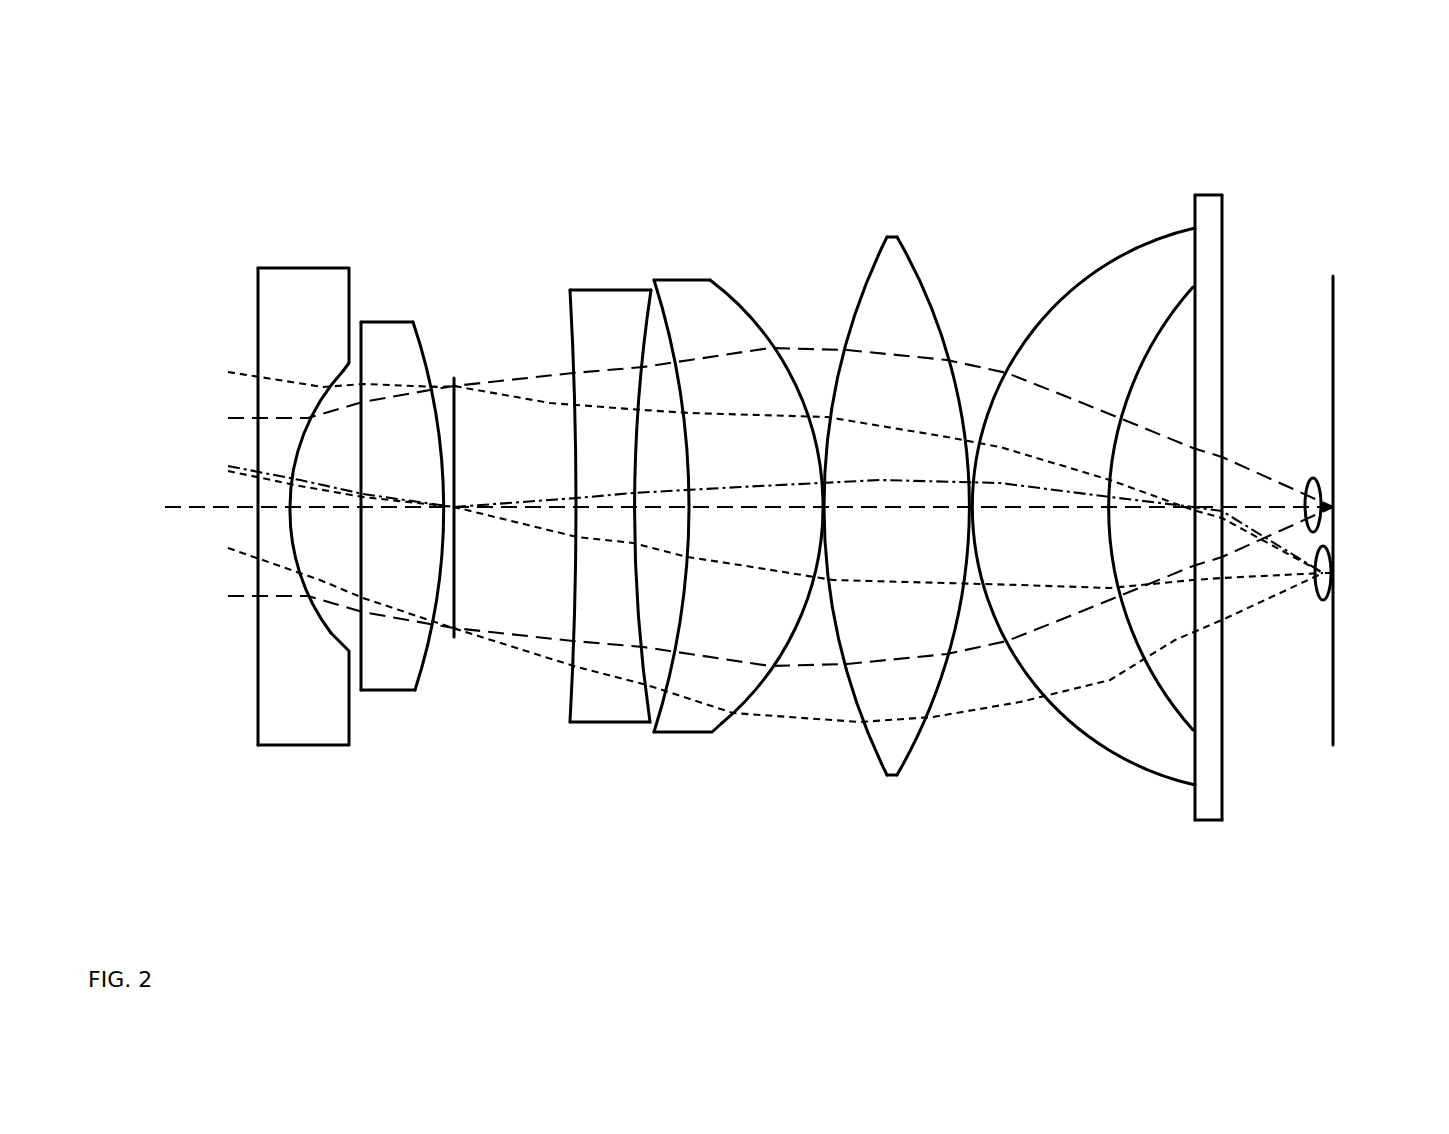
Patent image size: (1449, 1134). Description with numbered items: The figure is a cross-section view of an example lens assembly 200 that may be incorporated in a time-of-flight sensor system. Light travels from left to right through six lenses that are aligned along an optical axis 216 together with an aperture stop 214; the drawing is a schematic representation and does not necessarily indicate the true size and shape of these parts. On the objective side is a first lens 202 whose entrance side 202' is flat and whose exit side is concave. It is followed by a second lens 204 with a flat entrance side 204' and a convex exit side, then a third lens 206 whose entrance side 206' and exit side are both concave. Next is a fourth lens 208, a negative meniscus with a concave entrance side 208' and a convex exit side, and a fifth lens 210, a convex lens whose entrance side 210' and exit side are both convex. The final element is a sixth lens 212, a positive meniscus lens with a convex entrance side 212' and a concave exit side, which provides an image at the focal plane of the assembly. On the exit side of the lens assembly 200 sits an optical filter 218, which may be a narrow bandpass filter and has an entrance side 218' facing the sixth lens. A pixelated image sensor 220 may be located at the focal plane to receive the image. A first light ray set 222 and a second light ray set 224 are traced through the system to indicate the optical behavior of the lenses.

The lens assembly 200 is at (200, 90).
The first lens 202 is at (358, 517).
The entrance side of first lens 202' is at (312, 535).
The second lens 204 is at (446, 466).
The entrance side of second lens 204' is at (426, 554).
The third lens 206 is at (598, 512).
The entrance side of third lens 206' is at (530, 557).
The fourth lens 208 is at (743, 518).
The entrance side of fourth lens 208' is at (718, 558).
The fifth lens 210 is at (912, 498).
The entrance side of fifth lens 210' is at (839, 536).
The sixth lens 212 is at (1083, 514).
The entrance side of sixth lens 212' is at (1083, 543).
The aperture stop 214 is at (456, 377).
The optical axis 216 is at (223, 502).
The optical filter 218 is at (1268, 494).
The entrance side of optical filter 218' is at (1248, 531).
The pixelated image sensor 220 is at (1333, 328).
The first light ray set 222 is at (1318, 485).
The second light ray set 224 is at (1328, 548).